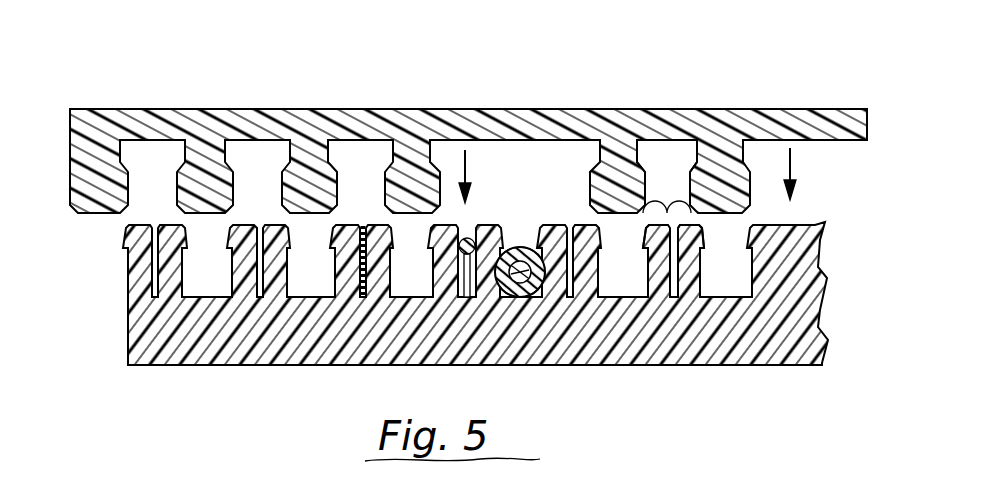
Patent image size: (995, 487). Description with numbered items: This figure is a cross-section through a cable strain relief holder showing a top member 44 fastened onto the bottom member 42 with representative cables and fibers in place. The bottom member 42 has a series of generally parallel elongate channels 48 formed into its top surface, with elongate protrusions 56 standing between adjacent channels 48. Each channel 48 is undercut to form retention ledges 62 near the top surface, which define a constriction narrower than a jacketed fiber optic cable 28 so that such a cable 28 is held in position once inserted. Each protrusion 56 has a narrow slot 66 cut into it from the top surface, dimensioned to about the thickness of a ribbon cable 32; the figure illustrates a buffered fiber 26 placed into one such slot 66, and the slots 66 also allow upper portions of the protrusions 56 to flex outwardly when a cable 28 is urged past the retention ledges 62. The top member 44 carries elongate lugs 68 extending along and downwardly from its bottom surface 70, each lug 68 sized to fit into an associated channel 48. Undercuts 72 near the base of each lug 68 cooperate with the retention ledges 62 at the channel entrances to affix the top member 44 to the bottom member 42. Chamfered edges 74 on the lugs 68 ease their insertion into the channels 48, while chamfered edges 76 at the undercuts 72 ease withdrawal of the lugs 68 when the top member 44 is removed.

The top member 44 is at (192, 122).
The undercut 72 is at (277, 155).
The ribbon cable 32 is at (360, 226).
The fiber optic cable 28 is at (527, 247).
The bottom surface 70 is at (508, 143).
The chamfered edge 76 is at (690, 153).
The chamfered edge 74 is at (668, 201).
The elongate lug 68 is at (93, 188).
The narrow slot 66 is at (150, 268).
The bottom member 42 is at (173, 362).
The channel 48 is at (297, 297).
The buffered fiber 26 is at (435, 285).
The retention ledge 62 is at (645, 235).
The elongate protrusion 56 is at (703, 233).